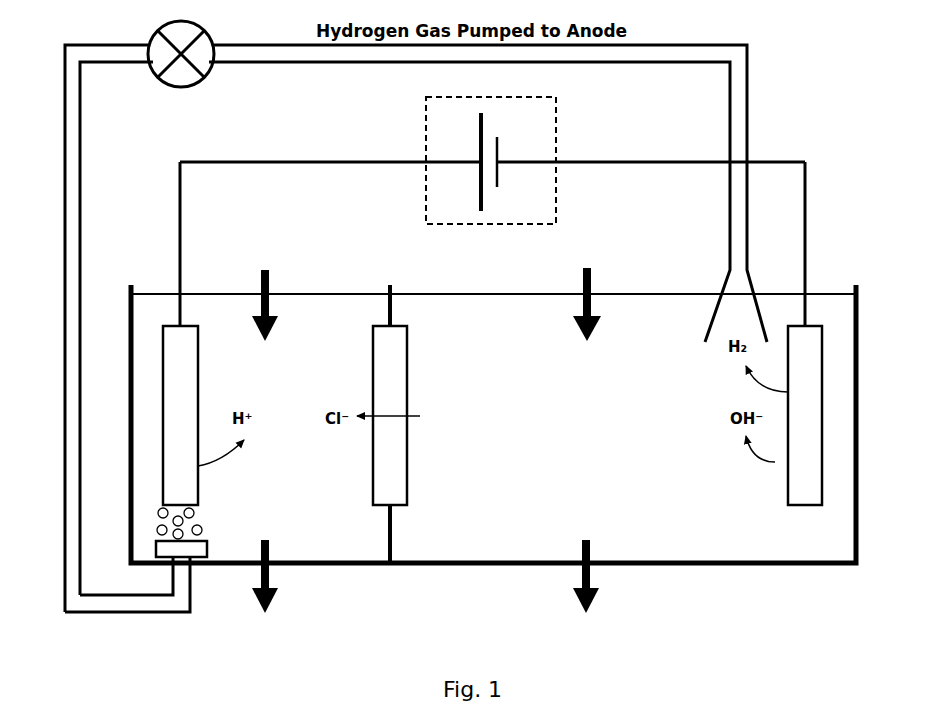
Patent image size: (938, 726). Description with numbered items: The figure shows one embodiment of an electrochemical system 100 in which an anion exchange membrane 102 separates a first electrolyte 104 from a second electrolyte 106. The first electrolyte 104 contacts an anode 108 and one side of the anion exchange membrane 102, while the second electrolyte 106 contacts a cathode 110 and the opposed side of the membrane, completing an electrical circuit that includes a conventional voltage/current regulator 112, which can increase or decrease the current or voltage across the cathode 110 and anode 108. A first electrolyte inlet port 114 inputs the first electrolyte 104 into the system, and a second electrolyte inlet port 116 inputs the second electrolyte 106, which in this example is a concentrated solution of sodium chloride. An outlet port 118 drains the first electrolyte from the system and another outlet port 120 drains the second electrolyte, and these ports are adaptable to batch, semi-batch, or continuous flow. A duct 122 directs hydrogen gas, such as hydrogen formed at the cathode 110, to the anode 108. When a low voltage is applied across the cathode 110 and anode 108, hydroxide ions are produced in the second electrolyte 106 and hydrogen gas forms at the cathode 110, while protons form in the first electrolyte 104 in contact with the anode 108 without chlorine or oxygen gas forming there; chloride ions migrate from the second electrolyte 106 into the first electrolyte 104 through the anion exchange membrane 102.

The electrochemical system 100 is at (813, 87).
The anion exchange membrane 102 is at (373, 322).
The first electrolyte 104 is at (223, 318).
The second electrolyte 106 is at (472, 318).
The anode 108 is at (163, 326).
The cathode 110 is at (823, 326).
The voltage/current regulator 112 is at (556, 120).
The first electrolyte inlet port 114 is at (258, 268).
The second electrolyte inlet port 116 is at (593, 282).
The outlet port 118 is at (278, 597).
The outlet port 120 is at (592, 582).
The duct 122 is at (63, 374).